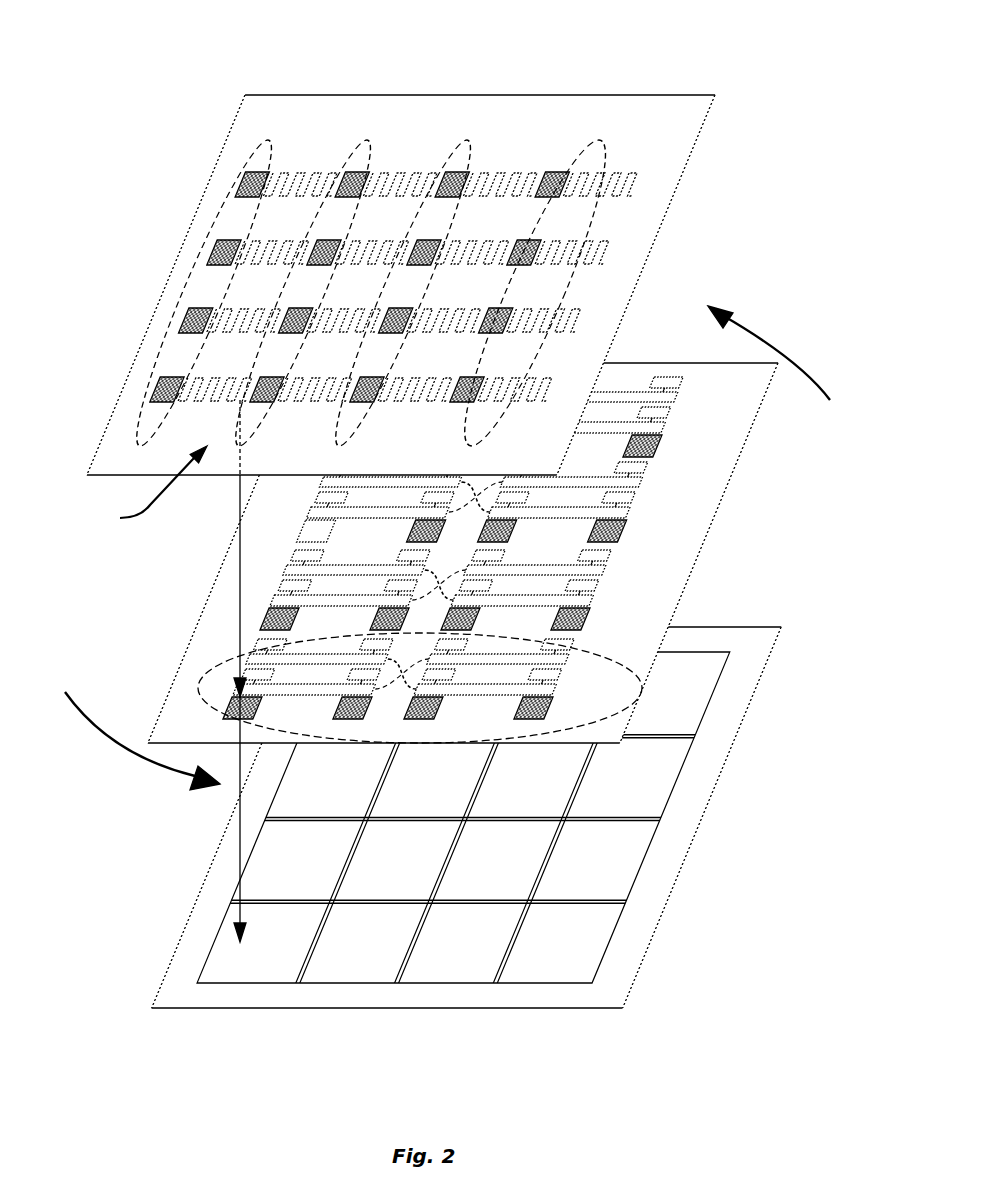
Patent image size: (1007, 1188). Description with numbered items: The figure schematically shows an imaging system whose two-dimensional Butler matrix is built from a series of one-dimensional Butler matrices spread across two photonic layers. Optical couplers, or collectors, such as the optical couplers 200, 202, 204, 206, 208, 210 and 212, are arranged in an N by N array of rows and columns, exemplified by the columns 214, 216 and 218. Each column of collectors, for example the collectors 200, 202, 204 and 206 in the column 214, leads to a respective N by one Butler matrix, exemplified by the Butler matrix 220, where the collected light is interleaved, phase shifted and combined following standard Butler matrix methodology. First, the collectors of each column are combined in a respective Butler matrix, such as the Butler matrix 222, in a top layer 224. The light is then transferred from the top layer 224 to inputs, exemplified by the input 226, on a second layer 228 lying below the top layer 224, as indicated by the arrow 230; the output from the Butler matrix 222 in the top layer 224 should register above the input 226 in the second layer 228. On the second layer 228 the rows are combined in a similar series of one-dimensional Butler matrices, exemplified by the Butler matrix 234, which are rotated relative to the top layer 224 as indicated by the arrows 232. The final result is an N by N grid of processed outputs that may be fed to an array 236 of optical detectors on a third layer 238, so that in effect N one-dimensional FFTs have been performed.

The optical coupler 200 is at (240, 190).
The optical coupler 202 is at (212, 258).
The optical coupler 204 is at (185, 325).
The optical coupler 206 is at (157, 392).
The optical coupler 208 is at (347, 173).
The optical coupler 210 is at (447, 173).
The optical coupler 212 is at (545, 173).
The column 214 is at (266, 140).
The column 216 is at (363, 140).
The column 218 is at (463, 140).
The Butler matrix 220 is at (590, 140).
The Butler matrix 222 is at (142, 491).
The top layer 224 is at (668, 204).
The input 226 is at (228, 698).
The second layer 228 is at (648, 470).
The arrow 230 is at (240, 580).
The arrows 232 is at (770, 345).
The Butler matrix 234 is at (640, 688).
The array of optical detectors 236 is at (568, 945).
The third layer 238 is at (725, 768).